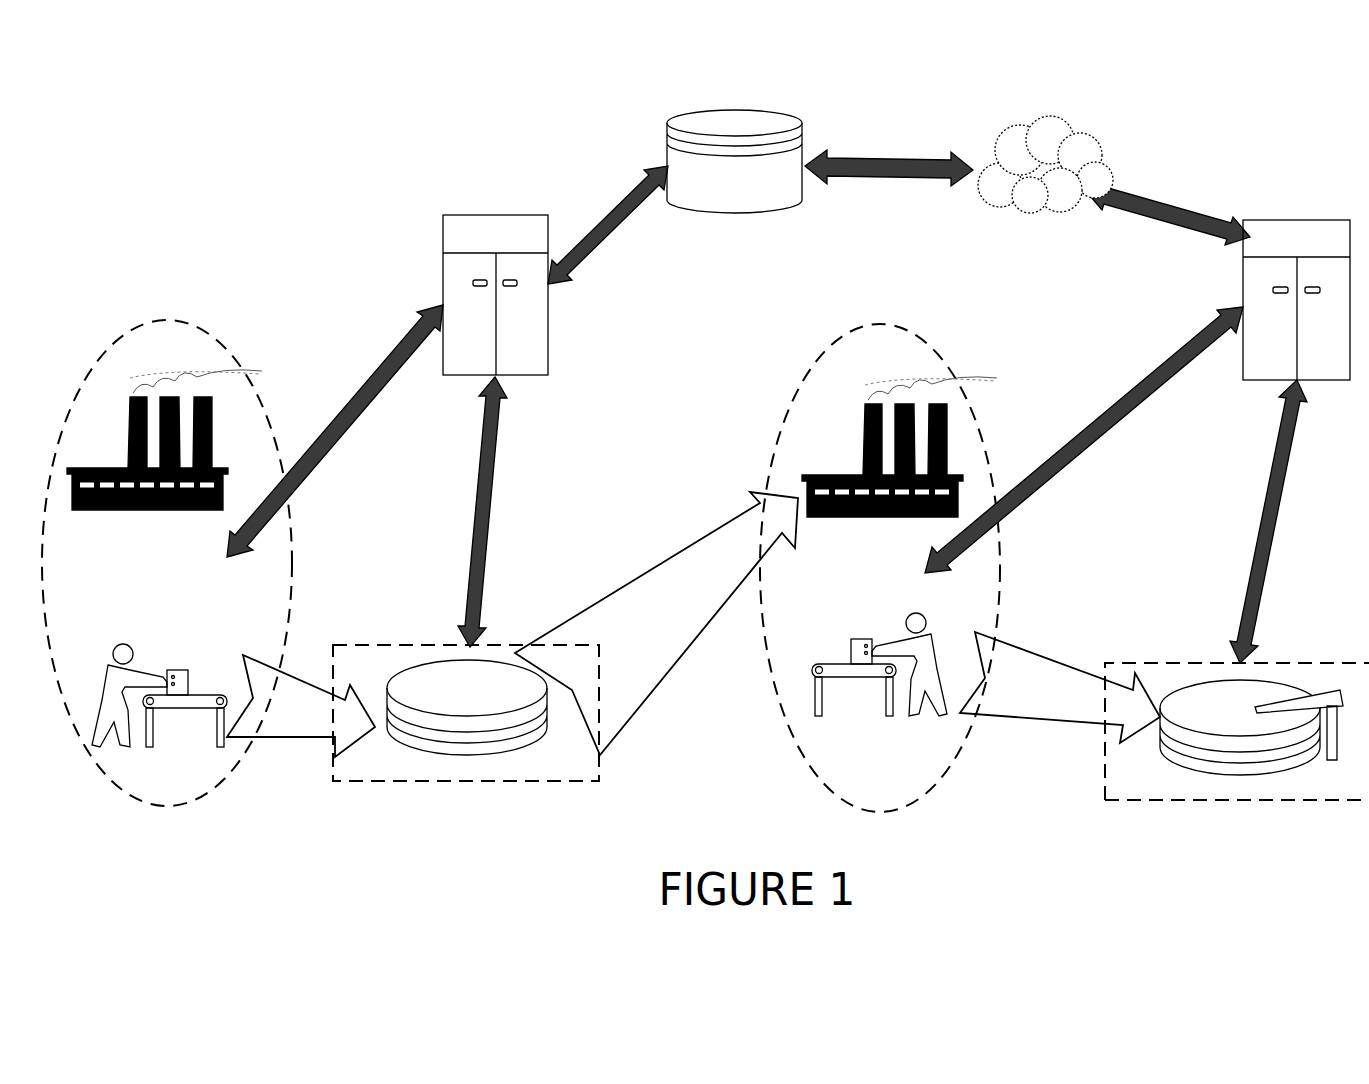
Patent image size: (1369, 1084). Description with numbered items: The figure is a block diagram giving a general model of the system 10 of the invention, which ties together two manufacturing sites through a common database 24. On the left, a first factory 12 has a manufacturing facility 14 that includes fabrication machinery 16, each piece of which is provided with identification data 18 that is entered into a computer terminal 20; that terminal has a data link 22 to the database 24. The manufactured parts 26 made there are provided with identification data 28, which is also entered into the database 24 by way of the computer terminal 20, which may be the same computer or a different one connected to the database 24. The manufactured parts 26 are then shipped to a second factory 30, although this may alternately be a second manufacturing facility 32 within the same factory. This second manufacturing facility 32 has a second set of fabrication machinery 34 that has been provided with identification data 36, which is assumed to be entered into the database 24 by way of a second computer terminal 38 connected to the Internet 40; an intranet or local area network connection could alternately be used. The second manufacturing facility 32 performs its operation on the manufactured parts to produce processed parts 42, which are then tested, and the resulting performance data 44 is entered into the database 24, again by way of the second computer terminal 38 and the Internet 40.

The system 10 is at (280, 240).
The first factory 12 is at (118, 444).
The manufacturing facility 14 is at (90, 695).
The fabrication machinery 16 is at (183, 668).
The identification data 18 is at (348, 425).
The computer terminal 20 is at (550, 323).
The data link 22 is at (605, 242).
The database 24 is at (802, 203).
The manufactured parts 26 is at (465, 785).
The identification data 28 is at (486, 452).
The second factory 30 is at (812, 432).
The second manufacturing facility 32 is at (950, 665).
The second set of fabrication machinery 34 is at (848, 642).
The identification data 36 is at (1147, 392).
The second computer terminal 38 is at (1297, 220).
The Internet 40 is at (1052, 212).
The processed parts 42 is at (1240, 778).
The performance data 44 is at (1290, 470).